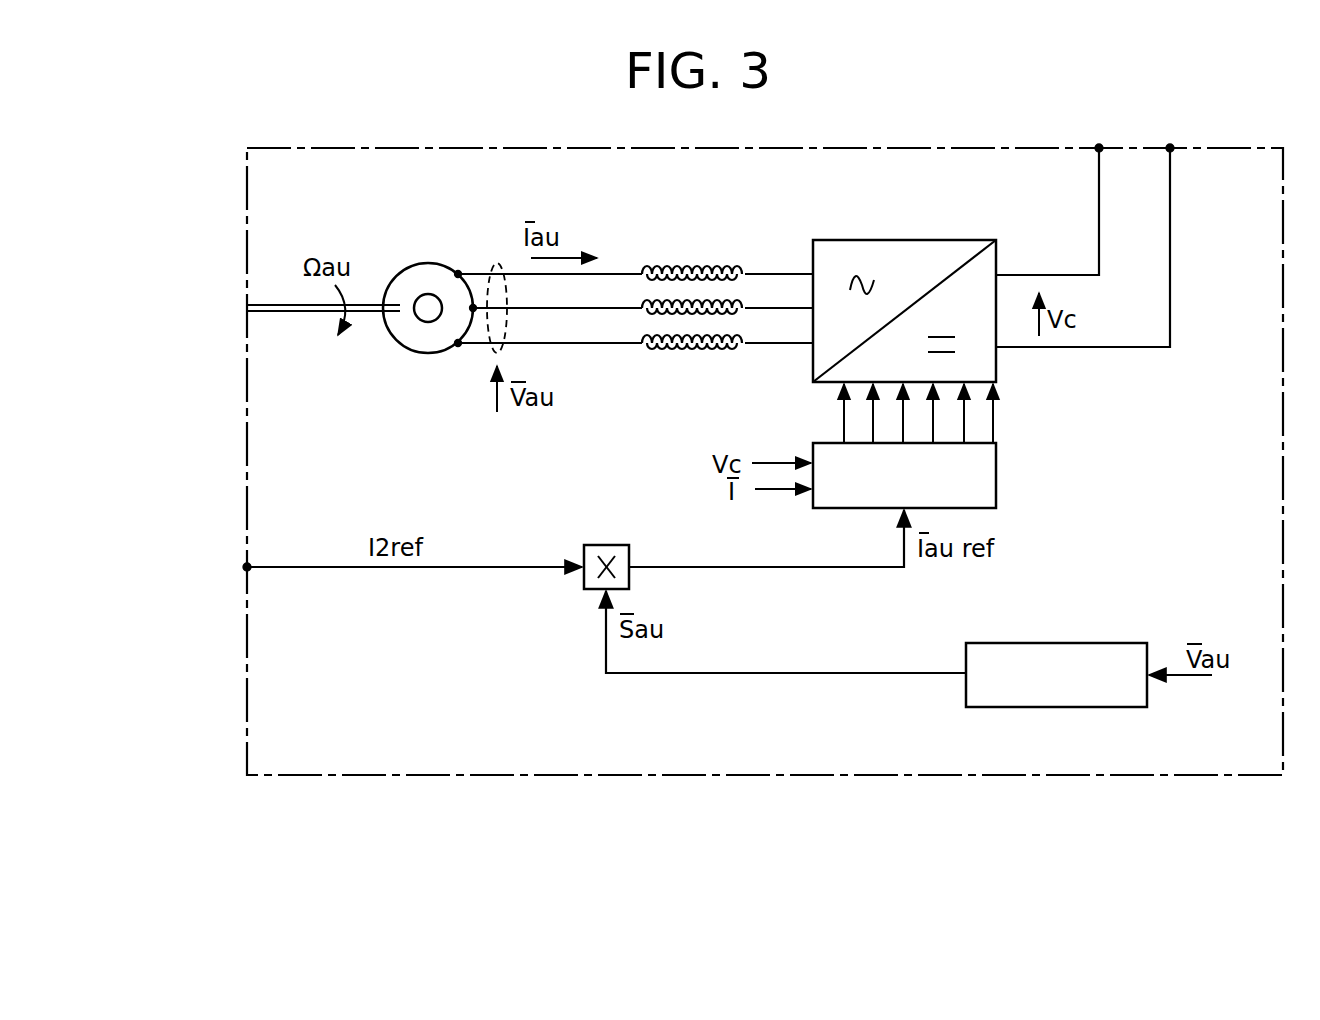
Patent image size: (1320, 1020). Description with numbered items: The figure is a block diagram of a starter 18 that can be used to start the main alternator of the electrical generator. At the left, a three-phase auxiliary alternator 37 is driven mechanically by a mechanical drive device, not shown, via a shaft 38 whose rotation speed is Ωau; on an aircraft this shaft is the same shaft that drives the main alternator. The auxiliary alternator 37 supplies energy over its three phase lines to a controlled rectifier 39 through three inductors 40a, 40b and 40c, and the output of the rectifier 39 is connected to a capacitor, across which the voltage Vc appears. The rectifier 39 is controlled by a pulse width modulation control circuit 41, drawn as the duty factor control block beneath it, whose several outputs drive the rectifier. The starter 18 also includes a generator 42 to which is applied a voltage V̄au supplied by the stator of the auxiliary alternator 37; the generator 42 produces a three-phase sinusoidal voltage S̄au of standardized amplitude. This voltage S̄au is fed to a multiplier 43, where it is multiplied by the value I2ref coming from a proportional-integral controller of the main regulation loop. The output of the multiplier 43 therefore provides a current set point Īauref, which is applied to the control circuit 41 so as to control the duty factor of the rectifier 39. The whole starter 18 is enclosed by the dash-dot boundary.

The starter 18 is at (247, 228).
The three-phase auxiliary alternator 37 is at (438, 280).
The shaft 38 is at (282, 315).
The controlled rectifier 39 is at (938, 262).
The inductor 40a is at (683, 262).
The inductor 40b is at (648, 313).
The inductor 40c is at (738, 352).
The pulse width modulation control circuit 41 is at (997, 470).
The generator 42 is at (1045, 660).
The multiplier 43 is at (606, 556).